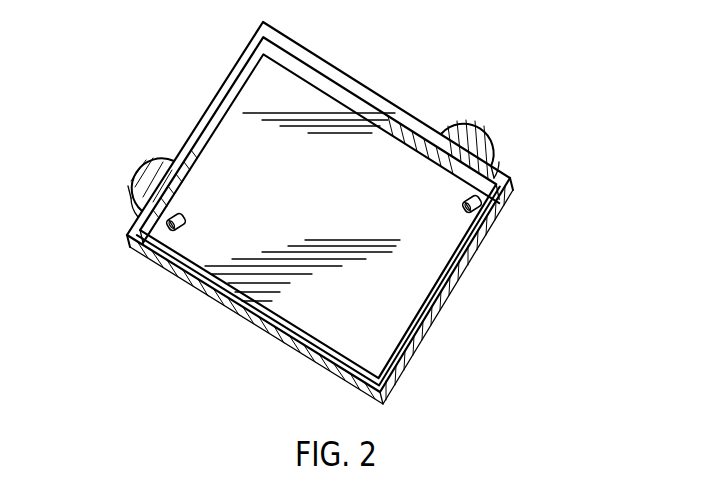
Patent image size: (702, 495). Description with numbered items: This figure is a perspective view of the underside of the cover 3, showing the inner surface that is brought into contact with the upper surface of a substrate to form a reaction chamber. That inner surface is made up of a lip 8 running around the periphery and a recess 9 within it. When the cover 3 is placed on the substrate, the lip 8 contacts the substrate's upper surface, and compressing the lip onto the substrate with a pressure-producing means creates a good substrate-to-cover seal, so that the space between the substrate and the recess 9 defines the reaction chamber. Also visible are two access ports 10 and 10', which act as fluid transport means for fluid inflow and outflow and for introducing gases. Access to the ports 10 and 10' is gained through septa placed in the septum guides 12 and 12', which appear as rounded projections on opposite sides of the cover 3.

The cover 3 is at (222, 98).
The lip 8 is at (400, 363).
The recess 9 is at (383, 248).
The access port 10 is at (536, 218).
The access port 10' is at (113, 212).
The septum guide 12 is at (517, 139).
The septum guide 12' is at (108, 165).